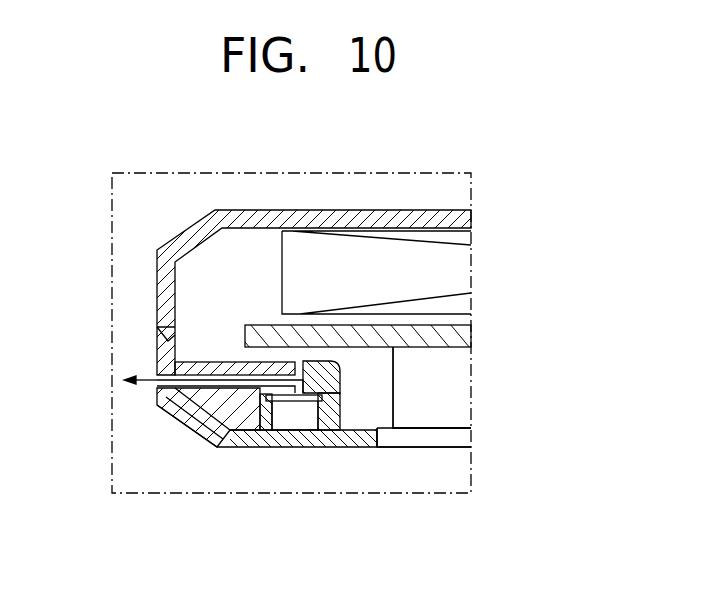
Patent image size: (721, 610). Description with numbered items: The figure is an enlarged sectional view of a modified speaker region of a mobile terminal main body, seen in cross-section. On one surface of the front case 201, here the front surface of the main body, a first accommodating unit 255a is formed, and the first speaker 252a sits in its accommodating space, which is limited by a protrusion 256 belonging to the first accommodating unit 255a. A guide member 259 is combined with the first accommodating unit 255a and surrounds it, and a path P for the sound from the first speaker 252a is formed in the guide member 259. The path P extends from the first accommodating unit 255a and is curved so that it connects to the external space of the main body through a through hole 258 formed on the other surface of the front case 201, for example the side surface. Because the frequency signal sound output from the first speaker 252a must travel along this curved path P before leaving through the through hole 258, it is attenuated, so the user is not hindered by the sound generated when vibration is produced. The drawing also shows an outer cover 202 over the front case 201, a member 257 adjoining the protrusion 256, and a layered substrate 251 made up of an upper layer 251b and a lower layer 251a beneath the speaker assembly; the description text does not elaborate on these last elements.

The housing cover 202 is at (168, 283).
The guide member 259 is at (212, 358).
The through hole 258 is at (155, 383).
The path P is at (176, 419).
The front case 201 is at (195, 425).
The first accommodating unit 255a is at (258, 414).
The first speaker 252a is at (282, 420).
The protrusion 256 is at (325, 417).
The sealing member 257 is at (332, 384).
The upper substrate layer 251b is at (460, 384).
The lower substrate layer 251a is at (457, 435).
The substrate 251 is at (583, 378).